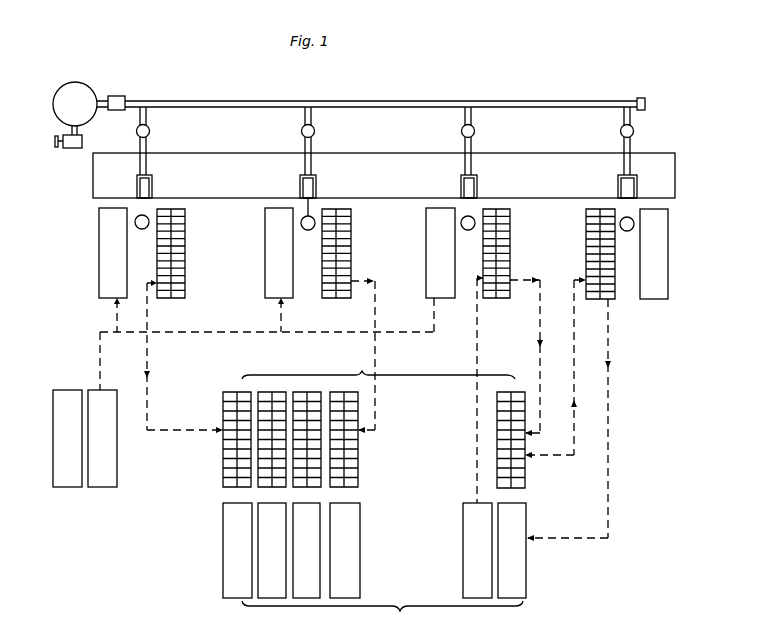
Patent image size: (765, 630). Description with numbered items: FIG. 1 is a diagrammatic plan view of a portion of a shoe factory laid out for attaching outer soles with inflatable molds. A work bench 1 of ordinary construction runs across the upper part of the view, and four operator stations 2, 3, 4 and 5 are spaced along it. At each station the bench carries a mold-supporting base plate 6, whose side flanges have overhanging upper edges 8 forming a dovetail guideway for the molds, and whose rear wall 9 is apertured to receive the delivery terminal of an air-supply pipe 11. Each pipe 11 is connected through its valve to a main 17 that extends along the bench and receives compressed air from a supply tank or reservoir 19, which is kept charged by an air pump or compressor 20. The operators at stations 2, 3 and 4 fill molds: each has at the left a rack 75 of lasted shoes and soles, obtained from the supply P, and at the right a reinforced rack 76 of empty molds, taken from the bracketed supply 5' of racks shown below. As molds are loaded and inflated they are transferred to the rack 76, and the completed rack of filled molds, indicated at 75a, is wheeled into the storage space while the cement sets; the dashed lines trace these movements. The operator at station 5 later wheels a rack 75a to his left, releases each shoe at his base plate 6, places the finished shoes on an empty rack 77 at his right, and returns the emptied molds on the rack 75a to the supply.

The work bench 1 is at (246, 192).
The operator station 2 is at (141, 229).
The operator station 3 is at (307, 230).
The operator station 4 is at (467, 230).
The operator station 5 is at (438, 298).
The group of containers 5' is at (374, 566).
The mold-supporting base plate 6 is at (137, 187).
The overhanging upper edges 8 is at (300, 186).
The rear wall 9 is at (303, 72).
The air-supply pipe 11 is at (305, 164).
The main 17 is at (126, 97).
The supply tank or reservoir 19 is at (88, 87).
The air pump or compressor 20 is at (72, 149).
The rack 75 is at (100, 256).
The rack of filled molds 75a is at (210, 384).
The rack 76 is at (185, 266).
The empty rack 77 is at (656, 290).
The supply of racks P is at (94, 388).